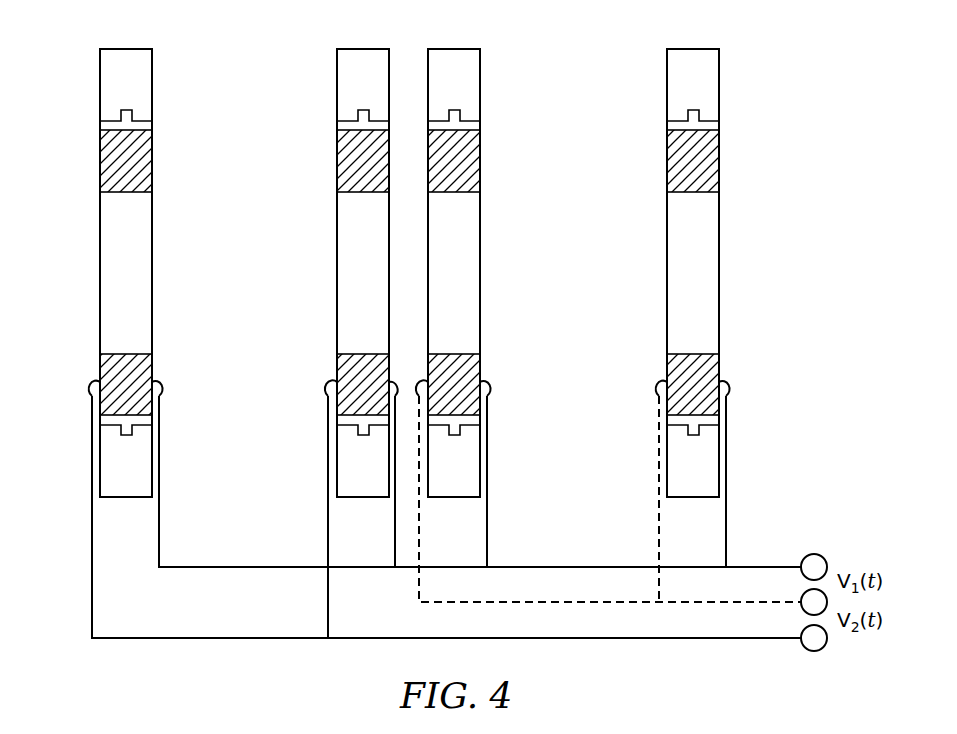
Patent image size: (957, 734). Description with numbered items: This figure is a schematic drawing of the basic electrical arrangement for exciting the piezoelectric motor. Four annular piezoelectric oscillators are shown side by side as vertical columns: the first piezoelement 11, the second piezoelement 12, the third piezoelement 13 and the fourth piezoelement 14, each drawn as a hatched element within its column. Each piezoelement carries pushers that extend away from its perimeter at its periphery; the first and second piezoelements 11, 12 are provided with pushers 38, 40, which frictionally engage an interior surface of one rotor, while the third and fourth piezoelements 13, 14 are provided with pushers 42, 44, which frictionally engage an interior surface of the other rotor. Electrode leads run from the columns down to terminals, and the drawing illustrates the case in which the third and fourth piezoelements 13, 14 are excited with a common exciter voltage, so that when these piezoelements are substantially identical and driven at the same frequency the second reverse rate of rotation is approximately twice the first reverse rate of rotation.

The pusher 44 is at (100, 71).
The pusher 42 is at (337, 71).
The pusher 40 is at (480, 71).
The pusher 38 is at (719, 71).
The fourth piezoelement 14 is at (100, 156).
The third piezoelement 13 is at (337, 156).
The second piezoelement 12 is at (480, 156).
The first piezoelement 11 is at (719, 156).